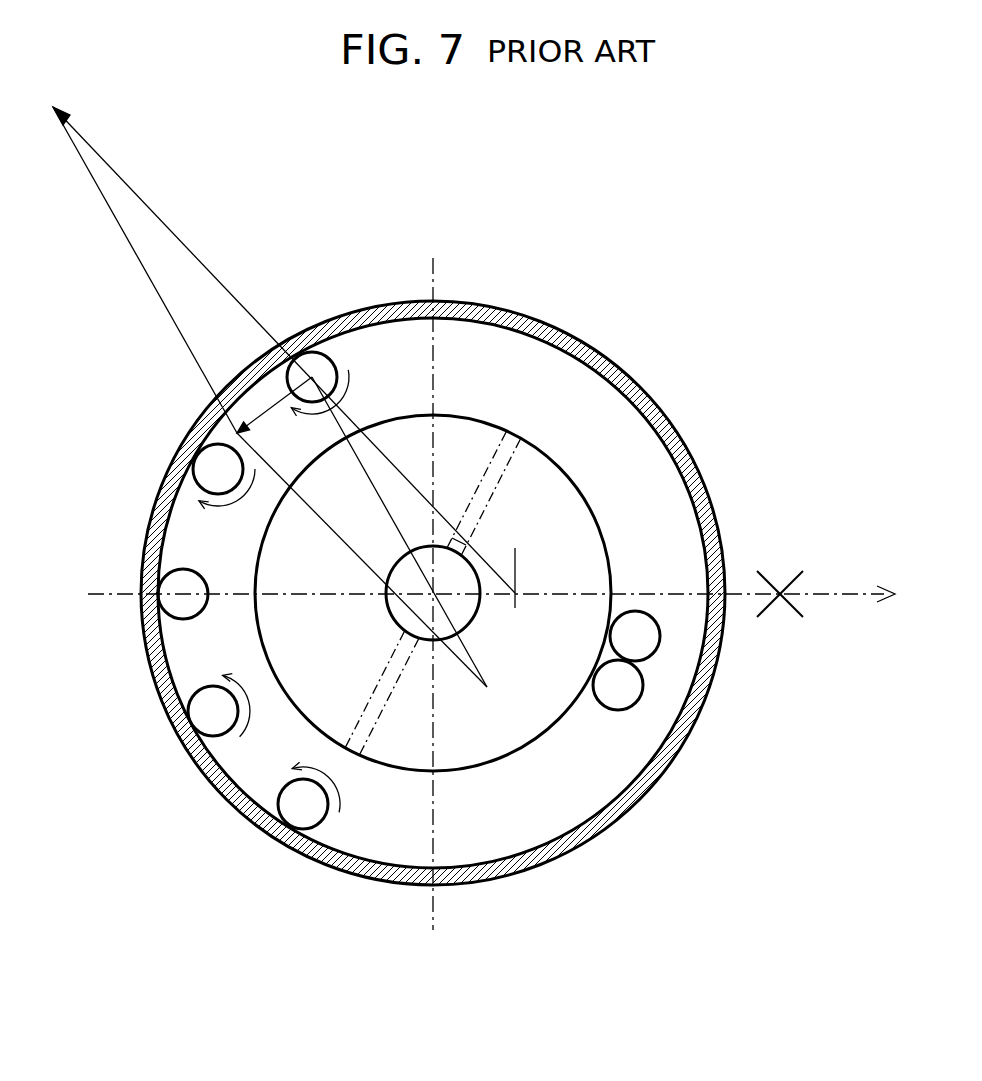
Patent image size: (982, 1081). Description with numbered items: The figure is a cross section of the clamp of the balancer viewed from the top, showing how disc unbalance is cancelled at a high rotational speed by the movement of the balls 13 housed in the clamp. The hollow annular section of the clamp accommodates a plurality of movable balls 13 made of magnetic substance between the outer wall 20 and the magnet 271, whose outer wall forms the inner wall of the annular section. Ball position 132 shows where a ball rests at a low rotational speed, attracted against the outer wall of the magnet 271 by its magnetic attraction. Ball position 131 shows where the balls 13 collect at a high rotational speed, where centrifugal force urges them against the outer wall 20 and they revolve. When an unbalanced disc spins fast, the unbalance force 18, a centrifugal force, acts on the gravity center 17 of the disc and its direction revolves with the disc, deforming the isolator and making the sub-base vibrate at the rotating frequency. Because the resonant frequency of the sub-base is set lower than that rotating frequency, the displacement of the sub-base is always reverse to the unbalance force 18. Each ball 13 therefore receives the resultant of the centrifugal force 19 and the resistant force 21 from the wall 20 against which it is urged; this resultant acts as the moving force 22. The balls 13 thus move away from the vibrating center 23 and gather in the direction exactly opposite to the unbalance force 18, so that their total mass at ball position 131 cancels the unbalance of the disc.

The balls 13 is at (298, 813).
The ball position 131 is at (172, 582).
The ball position 132 is at (642, 643).
The gravity center 17 is at (778, 578).
The unbalance force 18 is at (845, 588).
The centrifugal force 19 is at (193, 250).
The outer wall 20 is at (600, 392).
The resistant force 21 is at (387, 507).
The moving force 22 is at (213, 390).
The vibrating center 23 is at (514, 600).
The magnet 271 is at (497, 735).